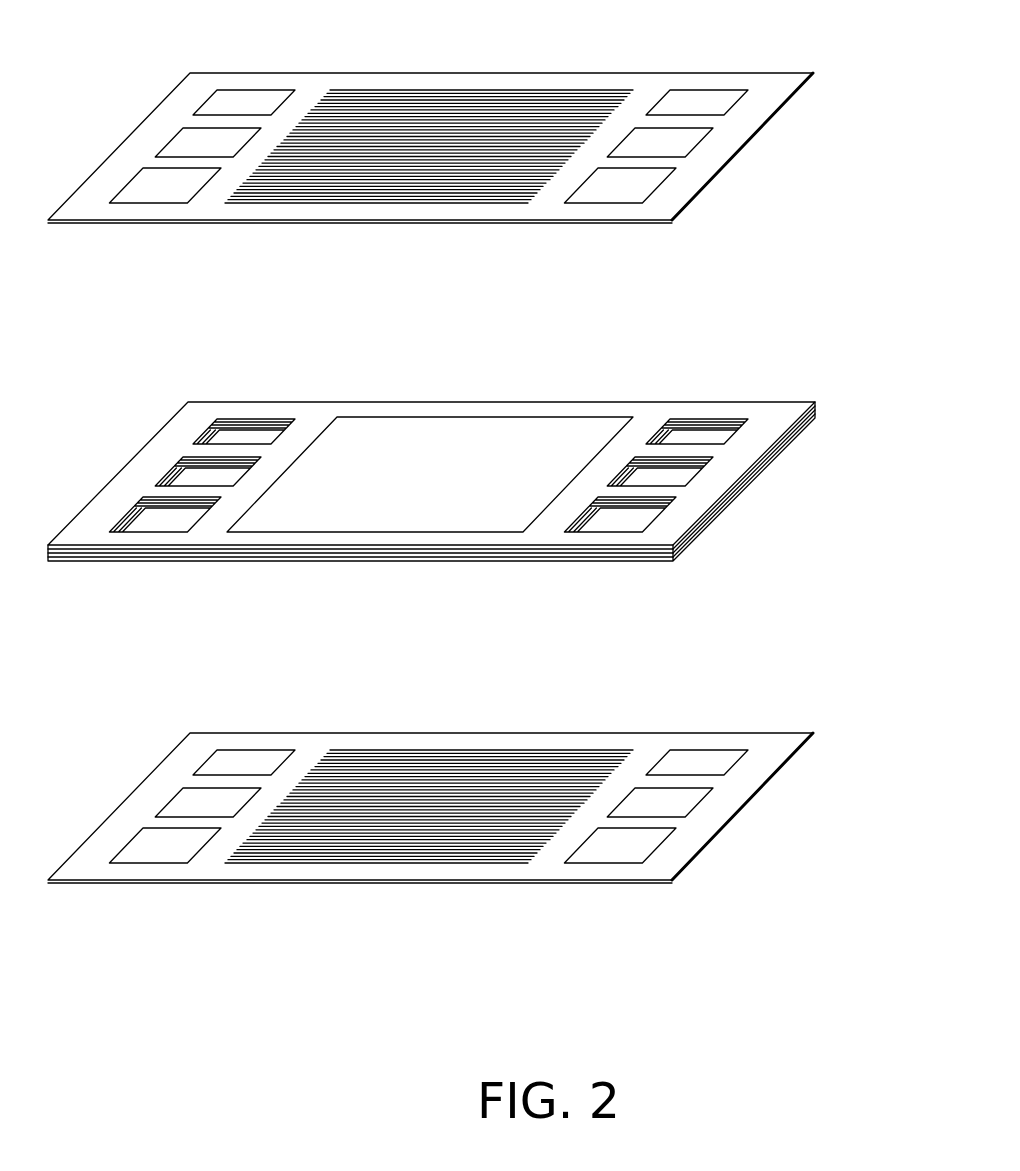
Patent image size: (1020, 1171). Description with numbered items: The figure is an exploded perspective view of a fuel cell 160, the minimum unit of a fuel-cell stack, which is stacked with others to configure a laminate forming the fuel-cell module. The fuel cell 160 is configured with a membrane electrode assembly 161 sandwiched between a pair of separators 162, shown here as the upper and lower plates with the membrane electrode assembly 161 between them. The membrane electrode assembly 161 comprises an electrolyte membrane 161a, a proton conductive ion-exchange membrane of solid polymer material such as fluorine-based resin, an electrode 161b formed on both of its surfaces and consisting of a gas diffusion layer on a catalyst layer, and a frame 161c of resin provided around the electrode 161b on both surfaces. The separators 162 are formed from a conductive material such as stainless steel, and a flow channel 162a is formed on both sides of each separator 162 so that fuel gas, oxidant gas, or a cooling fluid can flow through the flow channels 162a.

The fuel cell 160 is at (470, 448).
The membrane electrode assembly 161 is at (431, 475).
The electrolyte membrane 161a is at (330, 555).
The electrode 161b is at (395, 435).
The frame 161c is at (183, 437).
The separator 162 is at (430, 446).
The flow channel 162a is at (385, 98).